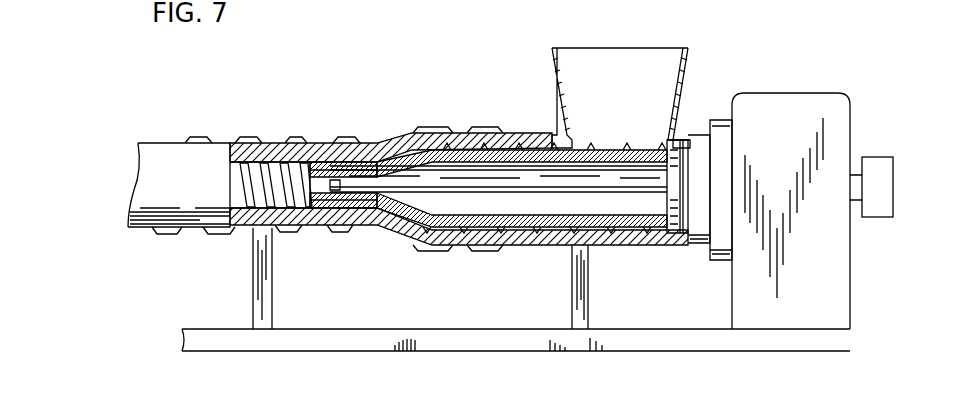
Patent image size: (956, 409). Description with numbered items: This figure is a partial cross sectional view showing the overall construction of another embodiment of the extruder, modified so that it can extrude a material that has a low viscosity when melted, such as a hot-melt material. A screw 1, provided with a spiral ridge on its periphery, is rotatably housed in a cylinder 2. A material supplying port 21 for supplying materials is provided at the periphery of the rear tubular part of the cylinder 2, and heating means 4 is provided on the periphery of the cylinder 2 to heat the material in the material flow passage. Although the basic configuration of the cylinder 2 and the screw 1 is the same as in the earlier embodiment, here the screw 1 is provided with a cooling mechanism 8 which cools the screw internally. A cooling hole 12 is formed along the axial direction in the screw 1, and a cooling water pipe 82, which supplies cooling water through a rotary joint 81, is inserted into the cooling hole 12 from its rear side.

The screw 1 is at (270, 177).
The cylinder 2 is at (326, 146).
The heating means 4 is at (245, 140).
The cooling mechanism 8 is at (497, 203).
The cooling hole 12 is at (373, 162).
The material supplying port 21 is at (643, 140).
The rotary joint 81 is at (876, 166).
The cooling water pipe 82 is at (508, 187).